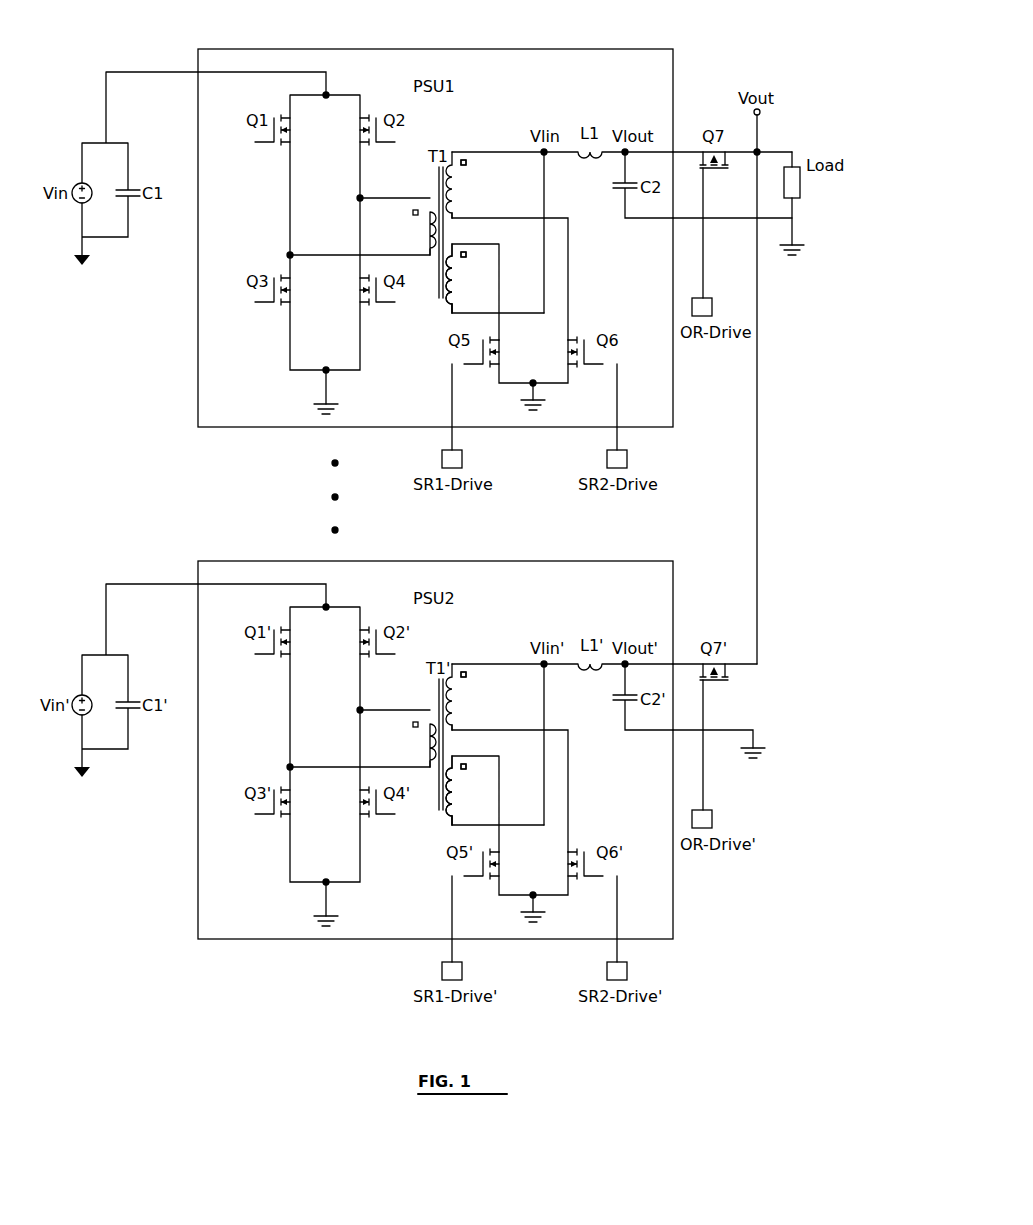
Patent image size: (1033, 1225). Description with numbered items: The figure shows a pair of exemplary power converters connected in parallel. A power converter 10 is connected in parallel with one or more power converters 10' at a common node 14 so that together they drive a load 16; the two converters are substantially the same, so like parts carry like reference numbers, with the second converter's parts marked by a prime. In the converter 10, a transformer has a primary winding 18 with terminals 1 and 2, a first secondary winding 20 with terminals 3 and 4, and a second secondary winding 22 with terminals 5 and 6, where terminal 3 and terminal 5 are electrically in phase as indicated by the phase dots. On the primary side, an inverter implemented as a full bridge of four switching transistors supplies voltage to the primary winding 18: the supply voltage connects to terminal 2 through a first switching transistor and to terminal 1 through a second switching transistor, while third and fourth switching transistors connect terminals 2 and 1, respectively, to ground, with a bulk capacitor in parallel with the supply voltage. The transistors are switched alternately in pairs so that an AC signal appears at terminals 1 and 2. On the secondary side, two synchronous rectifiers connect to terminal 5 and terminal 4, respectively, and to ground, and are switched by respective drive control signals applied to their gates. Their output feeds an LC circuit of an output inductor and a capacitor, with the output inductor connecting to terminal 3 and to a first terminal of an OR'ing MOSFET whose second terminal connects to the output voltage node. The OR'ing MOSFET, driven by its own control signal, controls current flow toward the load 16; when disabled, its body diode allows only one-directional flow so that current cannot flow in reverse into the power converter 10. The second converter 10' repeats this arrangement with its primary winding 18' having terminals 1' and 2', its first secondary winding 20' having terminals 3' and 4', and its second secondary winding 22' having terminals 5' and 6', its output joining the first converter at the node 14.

The power converter 10 is at (435, 221).
The power converter 10' is at (435, 733).
The node 14 is at (757, 152).
The load 16 is at (800, 182).
The primary winding 18 is at (393, 188).
The primary winding 18' is at (393, 700).
The first secondary winding 20 is at (472, 168).
The first secondary winding 20' is at (474, 680).
The second secondary winding 22 is at (432, 289).
The second secondary winding 22' is at (431, 801).
The terminal 1 is at (408, 210).
The terminal 2 is at (414, 244).
The terminal 3 is at (471, 170).
The terminal 4 is at (467, 205).
The terminal 5 is at (468, 265).
The terminal 6 is at (464, 301).
The terminal 1' is at (406, 722).
The terminal 2' is at (412, 756).
The terminal 3' is at (474, 682).
The terminal 4' is at (469, 717).
The terminal 5' is at (471, 777).
The terminal 6' is at (466, 813).